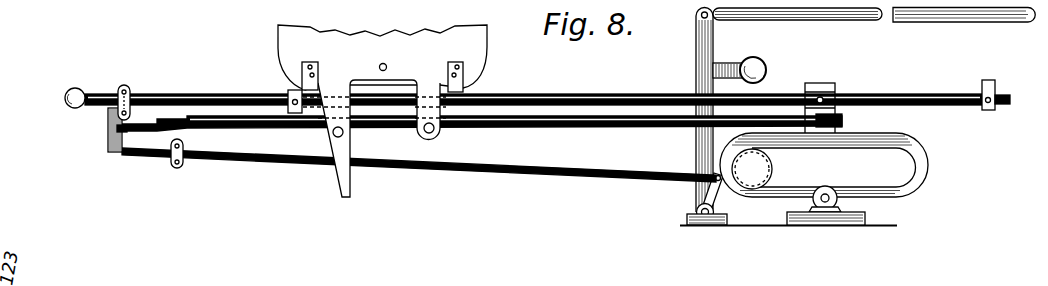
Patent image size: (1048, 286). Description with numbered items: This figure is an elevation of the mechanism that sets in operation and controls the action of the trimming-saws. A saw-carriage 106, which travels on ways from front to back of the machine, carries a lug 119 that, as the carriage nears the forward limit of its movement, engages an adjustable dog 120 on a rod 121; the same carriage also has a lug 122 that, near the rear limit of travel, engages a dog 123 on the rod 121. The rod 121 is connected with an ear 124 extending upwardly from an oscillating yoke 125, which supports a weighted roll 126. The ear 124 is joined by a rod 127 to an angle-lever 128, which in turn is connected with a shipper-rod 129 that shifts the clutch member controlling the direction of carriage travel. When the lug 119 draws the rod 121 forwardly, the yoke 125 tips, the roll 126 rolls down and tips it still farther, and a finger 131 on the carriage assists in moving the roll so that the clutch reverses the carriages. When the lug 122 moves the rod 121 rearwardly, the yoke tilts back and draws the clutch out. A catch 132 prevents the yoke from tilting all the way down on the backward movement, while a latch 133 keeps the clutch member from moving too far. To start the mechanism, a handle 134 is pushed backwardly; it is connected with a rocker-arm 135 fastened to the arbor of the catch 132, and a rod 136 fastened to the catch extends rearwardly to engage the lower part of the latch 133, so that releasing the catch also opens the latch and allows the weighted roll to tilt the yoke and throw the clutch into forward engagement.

The carriage 106 is at (382, 57).
The lug 119 is at (487, 77).
The adjustable dog 120 is at (971, 89).
The rod 121 is at (533, 90).
The lug 122 is at (336, 68).
The dog 123 is at (274, 93).
The ear 124 is at (840, 100).
The oscillating yoke 125 is at (824, 165).
The weighted roll 126 is at (752, 169).
The rod 127 is at (482, 137).
The angle-lever 128 is at (149, 101).
The shipper-rod 129 is at (83, 130).
The finger 131 is at (374, 140).
The catch 132 is at (769, 117).
The latch 133 is at (71, 108).
The handle 134 is at (964, 27).
The rocker-arm 135 is at (739, 58).
The rod 136 is at (419, 173).